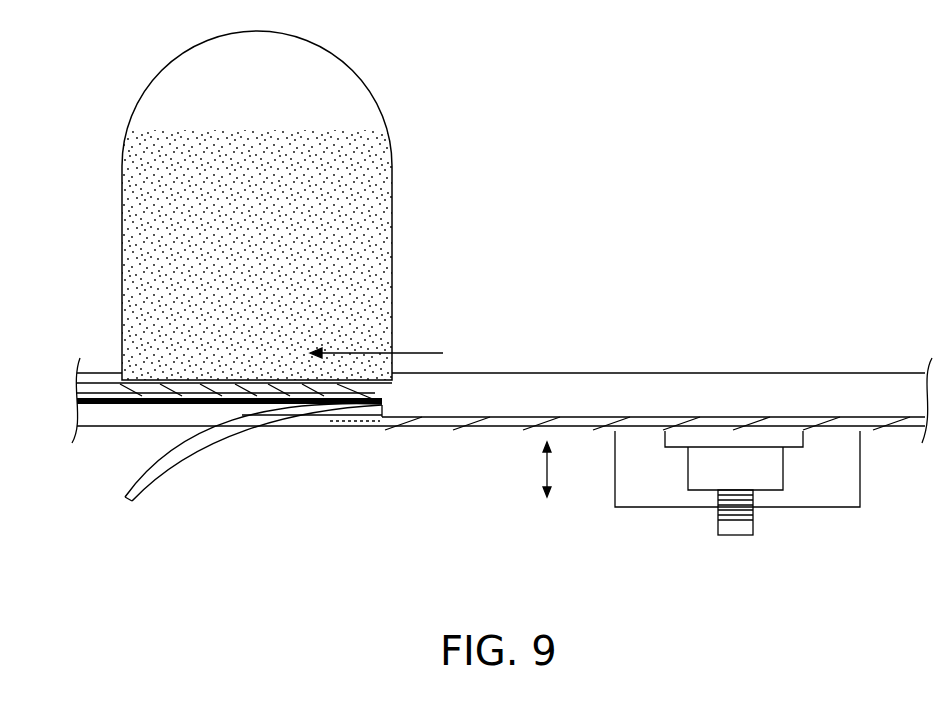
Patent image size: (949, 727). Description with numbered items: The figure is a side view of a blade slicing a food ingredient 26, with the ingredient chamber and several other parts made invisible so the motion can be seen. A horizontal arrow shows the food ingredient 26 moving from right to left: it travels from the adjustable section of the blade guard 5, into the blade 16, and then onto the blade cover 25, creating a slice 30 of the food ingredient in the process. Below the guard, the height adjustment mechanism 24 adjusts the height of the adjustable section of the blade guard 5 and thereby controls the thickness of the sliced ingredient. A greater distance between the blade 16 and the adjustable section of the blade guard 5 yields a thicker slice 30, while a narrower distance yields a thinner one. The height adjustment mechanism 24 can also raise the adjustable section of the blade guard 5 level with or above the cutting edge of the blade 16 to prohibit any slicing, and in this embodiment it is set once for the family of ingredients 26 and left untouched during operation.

The food ingredient 26 is at (340, 83).
The blade cover 25 is at (120, 392).
The blade 16 is at (373, 402).
The slice 30 is at (157, 475).
The height adjustment mechanism 24 is at (710, 478).
The adjustable section of the blade guard 5 is at (893, 422).